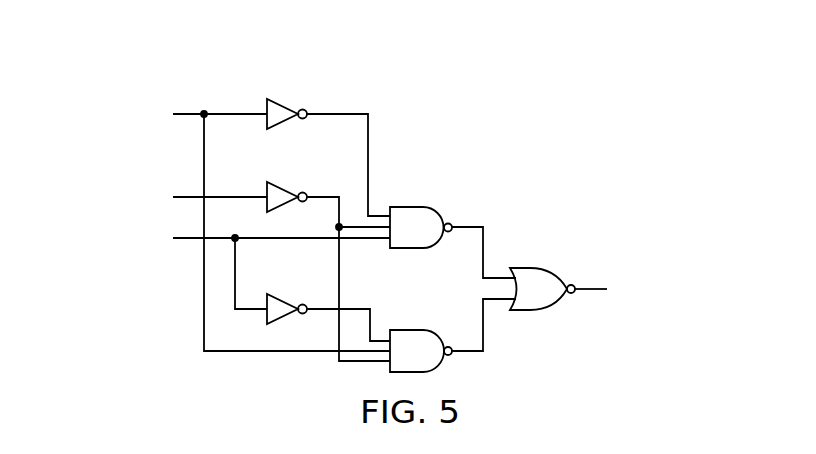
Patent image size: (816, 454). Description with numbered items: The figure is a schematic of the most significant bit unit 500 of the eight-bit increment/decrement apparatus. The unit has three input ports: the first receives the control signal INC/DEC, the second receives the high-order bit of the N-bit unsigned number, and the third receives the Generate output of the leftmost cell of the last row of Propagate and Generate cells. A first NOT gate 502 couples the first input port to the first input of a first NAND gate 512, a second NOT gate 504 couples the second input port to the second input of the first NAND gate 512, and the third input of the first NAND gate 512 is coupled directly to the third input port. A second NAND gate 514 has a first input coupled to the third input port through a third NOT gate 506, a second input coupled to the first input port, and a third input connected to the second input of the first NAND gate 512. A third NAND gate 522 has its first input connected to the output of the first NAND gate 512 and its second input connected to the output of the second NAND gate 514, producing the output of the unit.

The counter logic circuit 500 is at (382, 215).
The first NOT gate 502 is at (286, 101).
The second NOT gate 504 is at (286, 184).
The third NOT gate 506 is at (286, 296).
The first NAND gate 512 is at (414, 207).
The second NAND gate 514 is at (414, 330).
The third NAND gate 522 is at (534, 312).